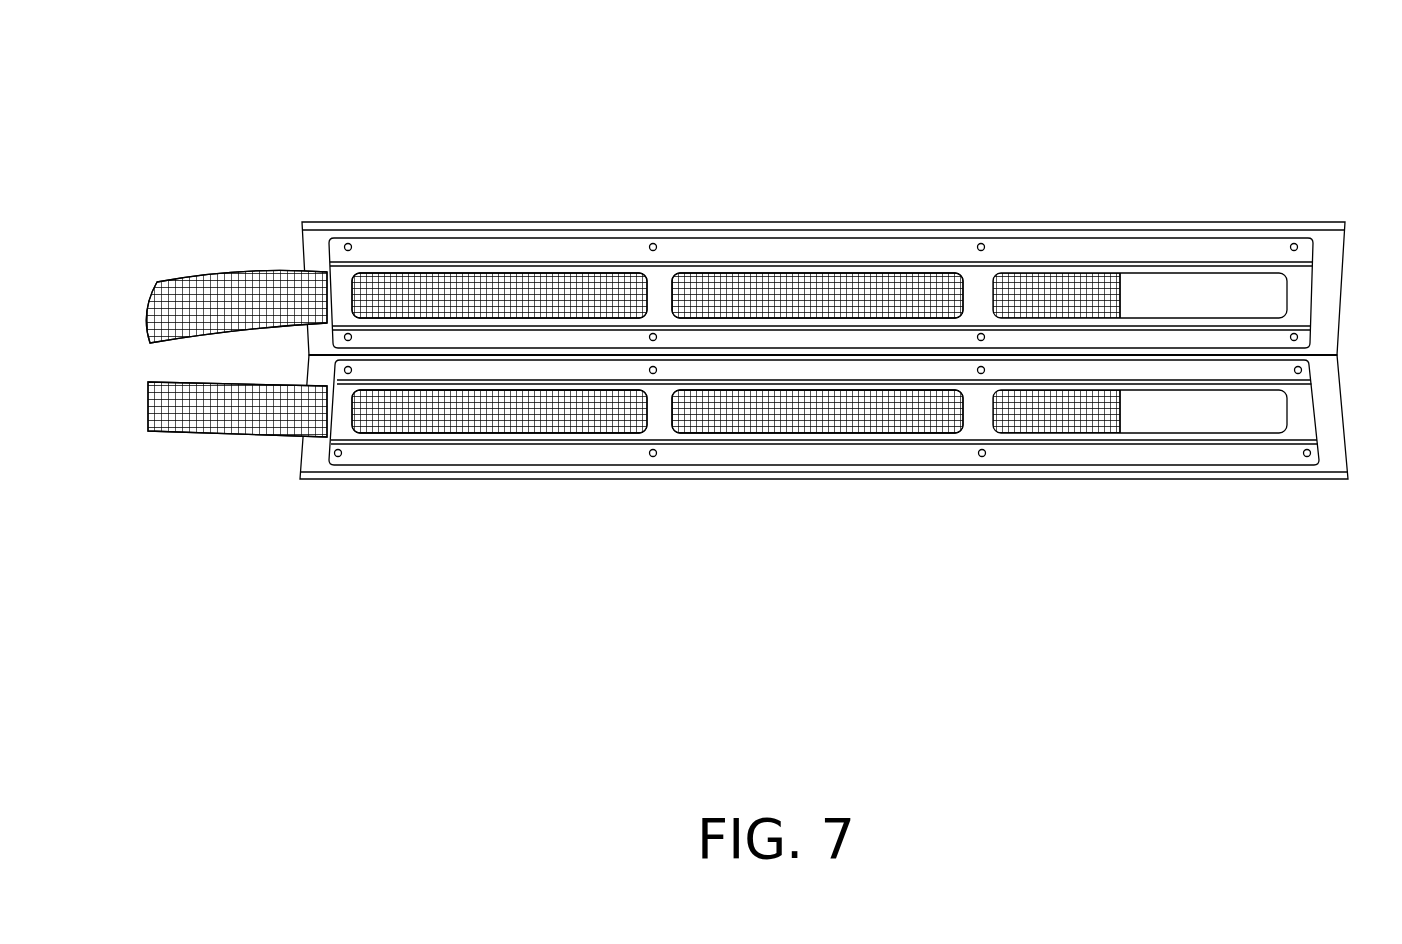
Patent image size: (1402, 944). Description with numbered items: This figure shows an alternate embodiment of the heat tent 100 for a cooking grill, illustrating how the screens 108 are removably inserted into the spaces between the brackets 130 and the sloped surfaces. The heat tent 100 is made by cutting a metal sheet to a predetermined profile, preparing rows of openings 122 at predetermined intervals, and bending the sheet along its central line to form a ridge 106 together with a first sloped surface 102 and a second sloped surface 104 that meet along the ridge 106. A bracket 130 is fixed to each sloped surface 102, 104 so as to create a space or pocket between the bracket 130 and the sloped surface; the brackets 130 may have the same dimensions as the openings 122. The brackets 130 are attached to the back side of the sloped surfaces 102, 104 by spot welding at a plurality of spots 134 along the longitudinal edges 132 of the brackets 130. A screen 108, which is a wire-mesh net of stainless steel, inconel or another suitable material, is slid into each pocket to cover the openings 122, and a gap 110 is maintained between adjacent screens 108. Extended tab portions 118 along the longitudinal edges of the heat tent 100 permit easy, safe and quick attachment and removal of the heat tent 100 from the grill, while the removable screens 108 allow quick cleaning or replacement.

The heat tent 100 is at (195, 98).
The first sloped surface 102 is at (679, 198).
The second sloped surface 104 is at (680, 490).
The ridge 106 is at (1325, 353).
The screen 108 is at (815, 290).
The gap 110 is at (975, 292).
The tab extensions 118 is at (313, 238).
The openings 122 is at (1157, 292).
The bracket 130 is at (342, 288).
The longitudinal edges 132 is at (885, 457).
The spots 134 is at (653, 247).